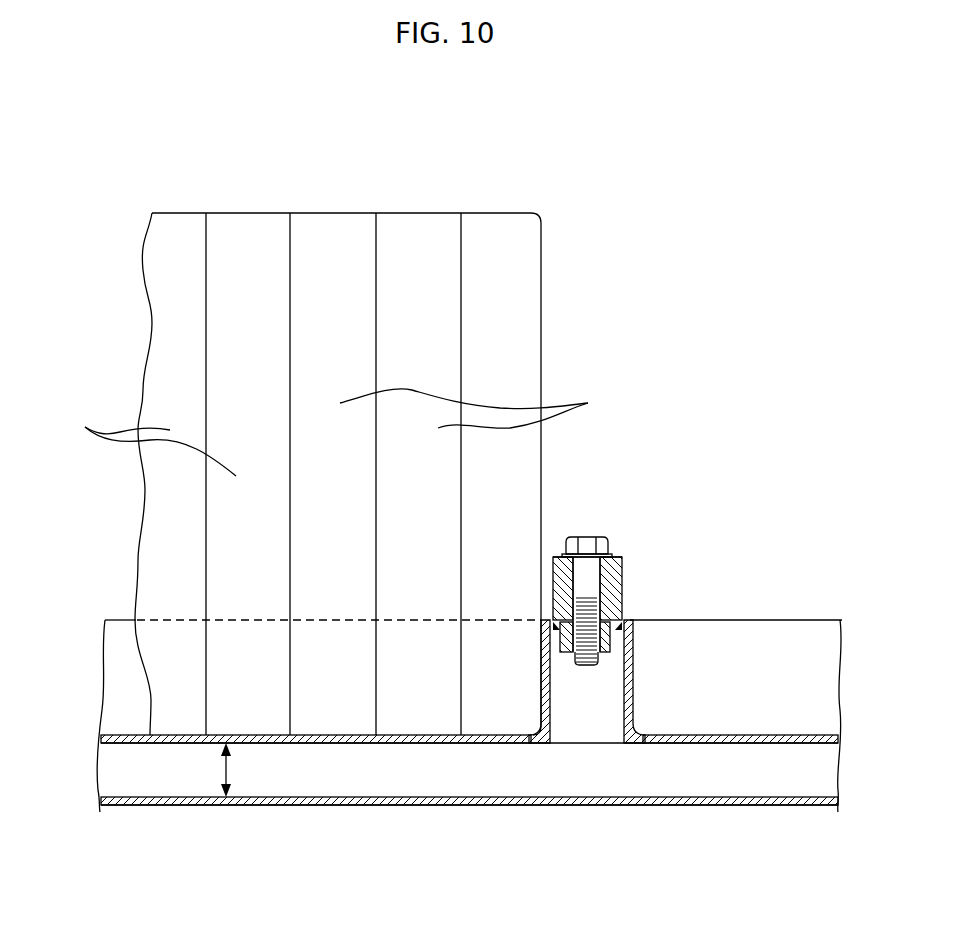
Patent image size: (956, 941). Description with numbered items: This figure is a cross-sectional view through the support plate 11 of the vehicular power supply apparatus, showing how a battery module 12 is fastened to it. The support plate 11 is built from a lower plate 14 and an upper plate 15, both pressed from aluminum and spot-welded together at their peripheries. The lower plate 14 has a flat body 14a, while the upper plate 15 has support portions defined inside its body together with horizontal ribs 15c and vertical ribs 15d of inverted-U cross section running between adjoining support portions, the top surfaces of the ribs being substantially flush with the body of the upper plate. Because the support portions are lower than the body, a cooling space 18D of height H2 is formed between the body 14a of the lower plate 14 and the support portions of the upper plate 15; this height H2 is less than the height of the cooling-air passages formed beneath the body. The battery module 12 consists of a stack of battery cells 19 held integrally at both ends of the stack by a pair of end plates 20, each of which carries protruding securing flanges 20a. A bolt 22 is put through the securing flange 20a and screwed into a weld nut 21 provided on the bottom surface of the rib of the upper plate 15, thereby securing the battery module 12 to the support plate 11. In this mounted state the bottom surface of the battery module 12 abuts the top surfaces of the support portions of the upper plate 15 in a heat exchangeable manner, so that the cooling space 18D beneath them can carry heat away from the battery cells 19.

The battery module 12 is at (563, 368).
The battery cell 19 is at (336, 432).
The end plate 20 is at (498, 472).
The securing flange 20a is at (622, 570).
The bolt 22 is at (592, 540).
The weld nut 21 is at (565, 653).
The horizontal rib 15c is at (772, 618).
The vertical rib 15d is at (634, 681).
The upper plate 15 is at (466, 752).
The body 14a is at (328, 806).
The lower plate 14 is at (624, 812).
The fourth cooling space 18D is at (395, 775).
The height of cooling space H2 is at (227, 770).
The support plate 11 is at (592, 886).